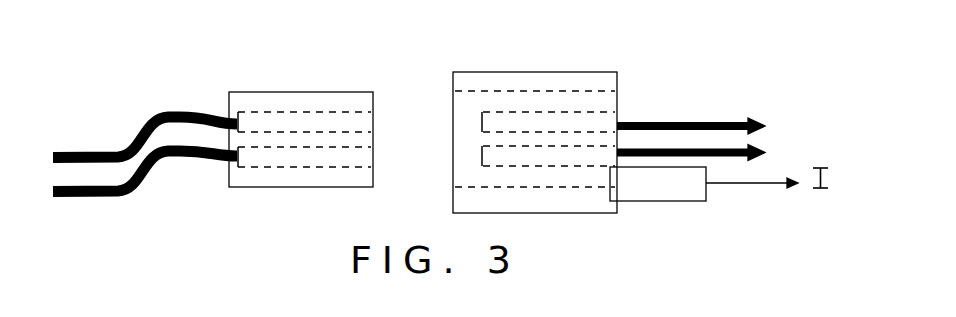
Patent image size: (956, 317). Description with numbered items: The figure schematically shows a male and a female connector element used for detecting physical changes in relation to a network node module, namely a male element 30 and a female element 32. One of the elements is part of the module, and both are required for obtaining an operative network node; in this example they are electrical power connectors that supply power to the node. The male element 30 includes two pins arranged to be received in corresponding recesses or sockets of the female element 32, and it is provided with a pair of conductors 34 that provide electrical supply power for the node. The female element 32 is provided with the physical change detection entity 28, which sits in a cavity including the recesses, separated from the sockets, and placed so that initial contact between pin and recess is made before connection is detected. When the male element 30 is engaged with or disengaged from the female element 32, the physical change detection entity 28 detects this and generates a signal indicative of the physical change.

The pair of conductors 34 is at (162, 115).
The male element 30 is at (315, 90).
The female element 32 is at (537, 78).
The physical change detection entity 28 is at (668, 202).